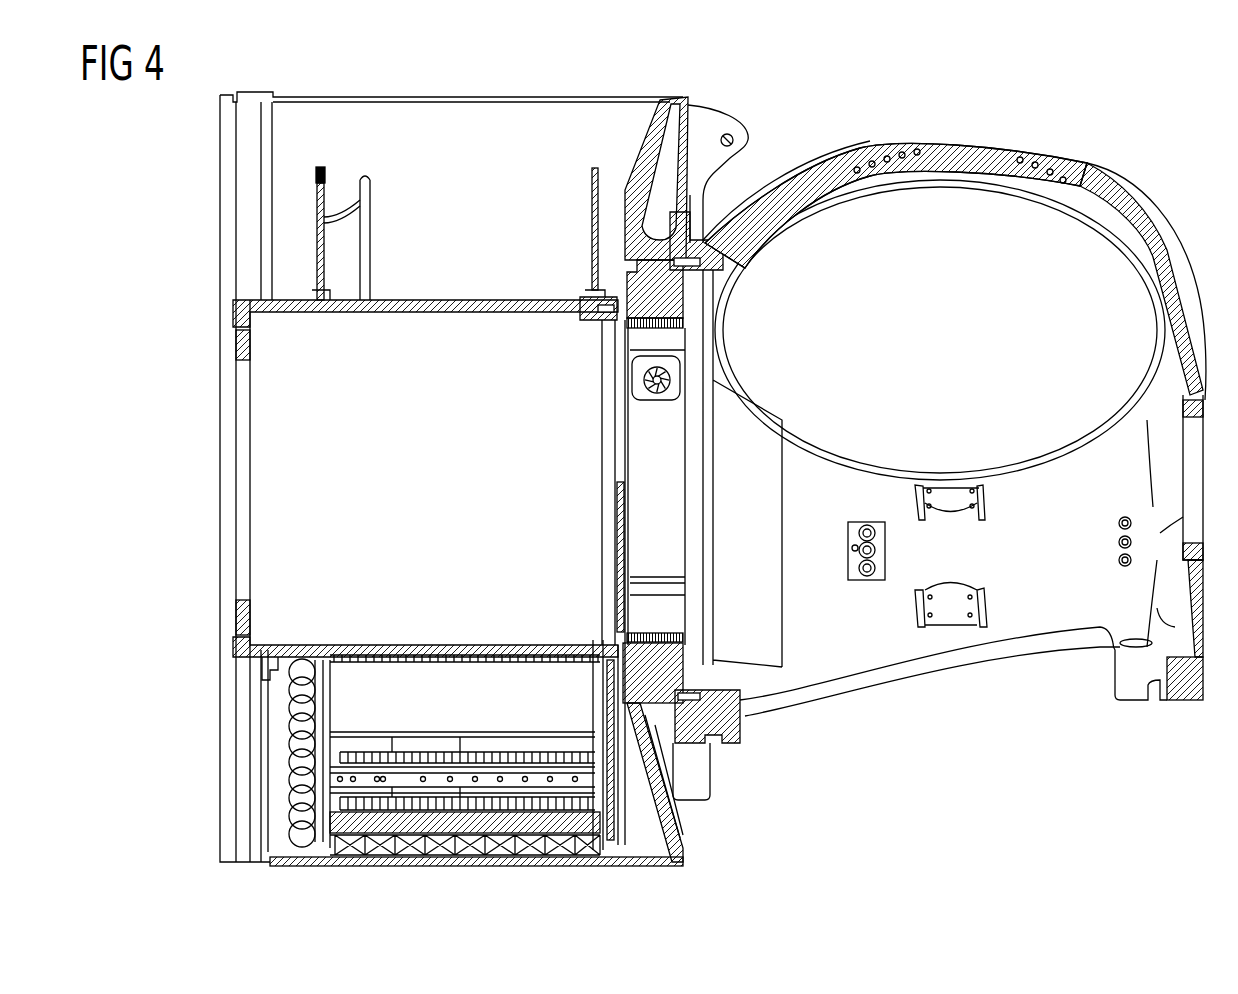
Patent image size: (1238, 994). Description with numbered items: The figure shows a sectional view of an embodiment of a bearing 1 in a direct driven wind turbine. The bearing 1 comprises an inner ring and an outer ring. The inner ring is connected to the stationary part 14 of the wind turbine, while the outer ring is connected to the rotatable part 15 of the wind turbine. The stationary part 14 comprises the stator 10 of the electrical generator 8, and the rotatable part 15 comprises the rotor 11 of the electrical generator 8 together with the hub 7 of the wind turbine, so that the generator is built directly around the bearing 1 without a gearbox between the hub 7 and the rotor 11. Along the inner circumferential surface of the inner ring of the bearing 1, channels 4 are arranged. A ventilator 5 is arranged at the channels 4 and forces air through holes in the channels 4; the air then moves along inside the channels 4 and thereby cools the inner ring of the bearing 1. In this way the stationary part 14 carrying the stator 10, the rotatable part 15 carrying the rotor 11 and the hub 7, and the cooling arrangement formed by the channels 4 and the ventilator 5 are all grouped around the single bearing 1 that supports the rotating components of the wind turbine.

The bearing 1 is at (637, 293).
The channels 4 is at (638, 465).
The ventilator 5 is at (655, 402).
The hub 7 is at (1153, 255).
The electrical generator 8 is at (313, 723).
The stator 10 is at (373, 827).
The rotor 11 is at (427, 866).
The stationary part 14 is at (232, 620).
The rotatable part 15 is at (668, 98).